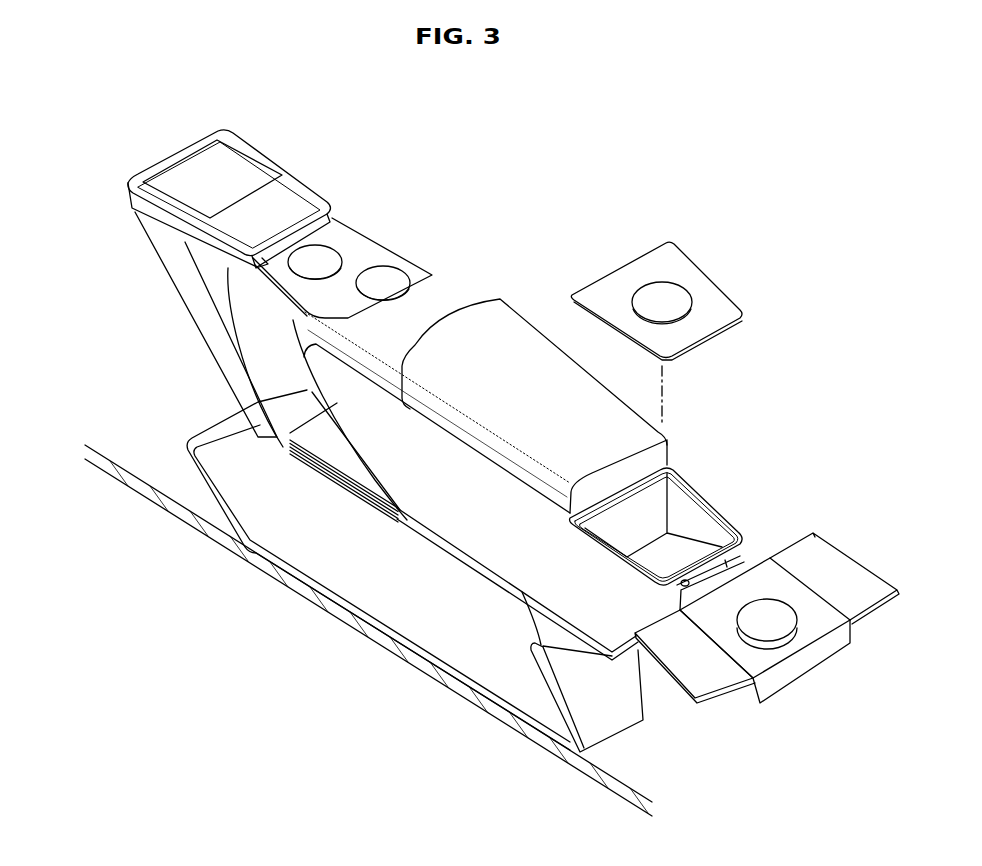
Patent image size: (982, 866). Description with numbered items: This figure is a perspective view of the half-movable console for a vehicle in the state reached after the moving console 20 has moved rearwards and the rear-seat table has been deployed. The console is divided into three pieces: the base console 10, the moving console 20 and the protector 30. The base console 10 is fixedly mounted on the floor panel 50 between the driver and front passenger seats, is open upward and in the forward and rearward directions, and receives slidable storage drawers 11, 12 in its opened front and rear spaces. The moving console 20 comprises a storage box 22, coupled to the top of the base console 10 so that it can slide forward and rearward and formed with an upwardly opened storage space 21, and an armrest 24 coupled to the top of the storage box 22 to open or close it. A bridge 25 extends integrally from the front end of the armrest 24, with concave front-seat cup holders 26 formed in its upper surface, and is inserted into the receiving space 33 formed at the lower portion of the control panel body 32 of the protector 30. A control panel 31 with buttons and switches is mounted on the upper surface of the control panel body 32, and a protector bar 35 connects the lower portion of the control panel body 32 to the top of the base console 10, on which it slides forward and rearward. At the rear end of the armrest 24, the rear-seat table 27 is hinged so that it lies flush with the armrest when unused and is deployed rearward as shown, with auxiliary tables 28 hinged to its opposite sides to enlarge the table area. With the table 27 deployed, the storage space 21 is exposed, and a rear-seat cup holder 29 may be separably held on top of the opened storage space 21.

The base console 10 is at (315, 528).
The storage drawer 11 is at (210, 485).
The storage drawer 12 is at (607, 713).
The moving console 20 is at (512, 545).
The storage space 21 is at (695, 528).
The storage box 22 is at (440, 500).
The armrest 24 is at (523, 343).
The bridge 25 is at (340, 230).
The cup holders 26 is at (387, 278).
The table 27 is at (802, 670).
The auxiliary tables 28 is at (710, 672).
The cup holder 29 is at (698, 283).
The protector 30 is at (152, 245).
The control panel 31 is at (230, 162).
The control panel body 32 is at (140, 200).
The receiving space 33 is at (332, 213).
The protector bar 35 is at (187, 292).
The floor panel 50 is at (522, 735).